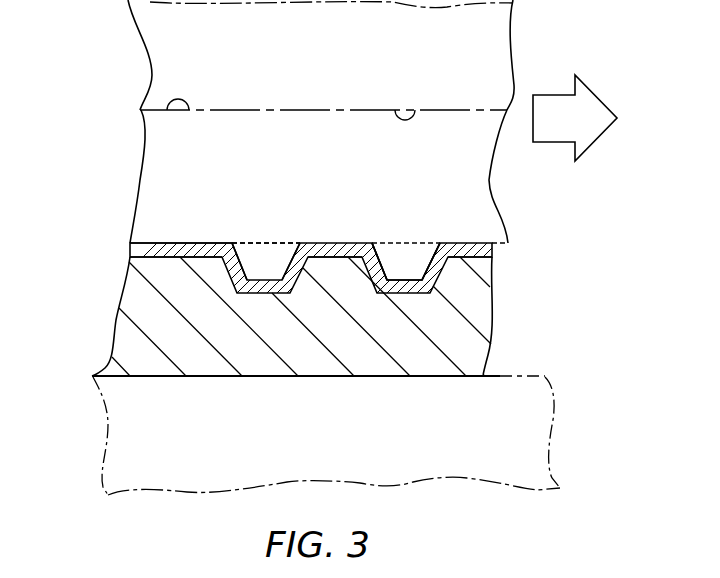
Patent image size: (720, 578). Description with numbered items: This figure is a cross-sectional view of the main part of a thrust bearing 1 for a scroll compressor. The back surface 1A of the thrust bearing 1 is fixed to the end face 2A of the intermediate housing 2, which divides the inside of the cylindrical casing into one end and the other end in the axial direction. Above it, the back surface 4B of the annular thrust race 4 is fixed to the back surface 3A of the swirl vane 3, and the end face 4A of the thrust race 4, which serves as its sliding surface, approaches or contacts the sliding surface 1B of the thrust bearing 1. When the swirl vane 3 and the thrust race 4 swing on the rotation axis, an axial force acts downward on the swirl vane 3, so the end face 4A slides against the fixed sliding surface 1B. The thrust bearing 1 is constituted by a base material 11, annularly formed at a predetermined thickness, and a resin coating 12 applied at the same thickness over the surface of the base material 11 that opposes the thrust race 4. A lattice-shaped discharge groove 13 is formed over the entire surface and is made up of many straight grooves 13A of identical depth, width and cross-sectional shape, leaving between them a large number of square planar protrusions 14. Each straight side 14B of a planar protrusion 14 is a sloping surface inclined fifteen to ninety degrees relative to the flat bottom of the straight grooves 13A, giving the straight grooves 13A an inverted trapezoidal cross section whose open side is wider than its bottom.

The thrust bearing 1 is at (339, 293).
The back surface 1A is at (300, 378).
The sliding surface 1B is at (193, 242).
The intermediate housing 2 is at (558, 420).
The end face 2A is at (508, 376).
The swirl vane 3 is at (321, 55).
The back surface 3A is at (413, 110).
The thrust race 4 is at (481, 186).
The end face 4A is at (290, 243).
The back surface 4B is at (188, 114).
The base material 11 is at (462, 338).
The resin coating 12 is at (496, 250).
The lattice-shaped discharge groove 13 is at (412, 262).
The straight groove 13A is at (248, 260).
The planar protrusion 14 is at (172, 267).
The straight side 14B is at (276, 256).